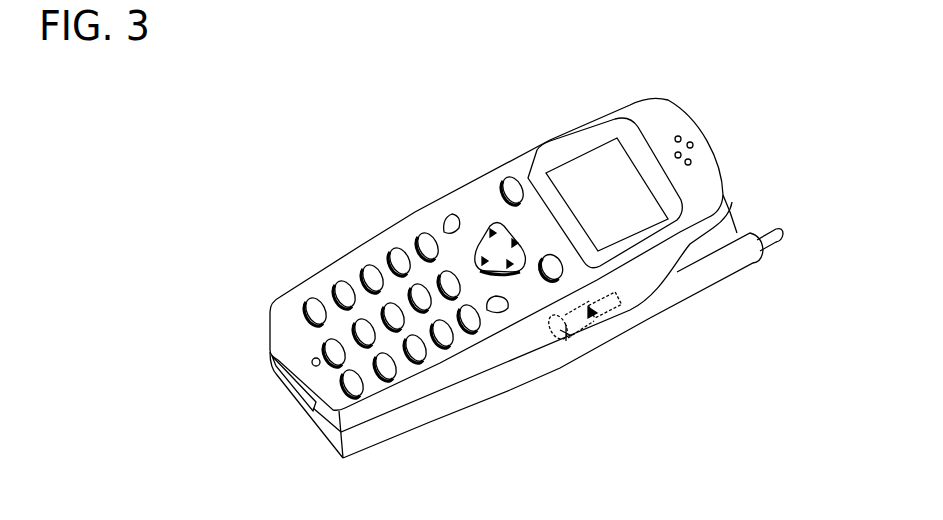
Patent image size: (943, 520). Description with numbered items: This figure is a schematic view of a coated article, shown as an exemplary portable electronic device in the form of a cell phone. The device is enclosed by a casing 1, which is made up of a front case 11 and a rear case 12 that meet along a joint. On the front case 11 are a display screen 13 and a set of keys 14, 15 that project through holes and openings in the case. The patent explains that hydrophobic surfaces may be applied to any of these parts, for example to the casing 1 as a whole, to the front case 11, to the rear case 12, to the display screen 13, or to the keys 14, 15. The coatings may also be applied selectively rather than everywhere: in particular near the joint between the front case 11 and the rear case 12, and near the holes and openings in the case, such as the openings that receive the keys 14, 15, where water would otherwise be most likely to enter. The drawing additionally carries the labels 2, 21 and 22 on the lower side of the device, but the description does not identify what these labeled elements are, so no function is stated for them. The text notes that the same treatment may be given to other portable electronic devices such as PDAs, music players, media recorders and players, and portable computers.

The casing 1 is at (791, 142).
The front case 11 is at (730, 195).
The rear case 12 is at (740, 232).
The display screen 13 is at (588, 172).
The keys 14 is at (397, 247).
The keys 15 is at (497, 222).
The connector 2 is at (680, 332).
The connector terminal 21 is at (612, 312).
The cable plug 22 is at (578, 325).